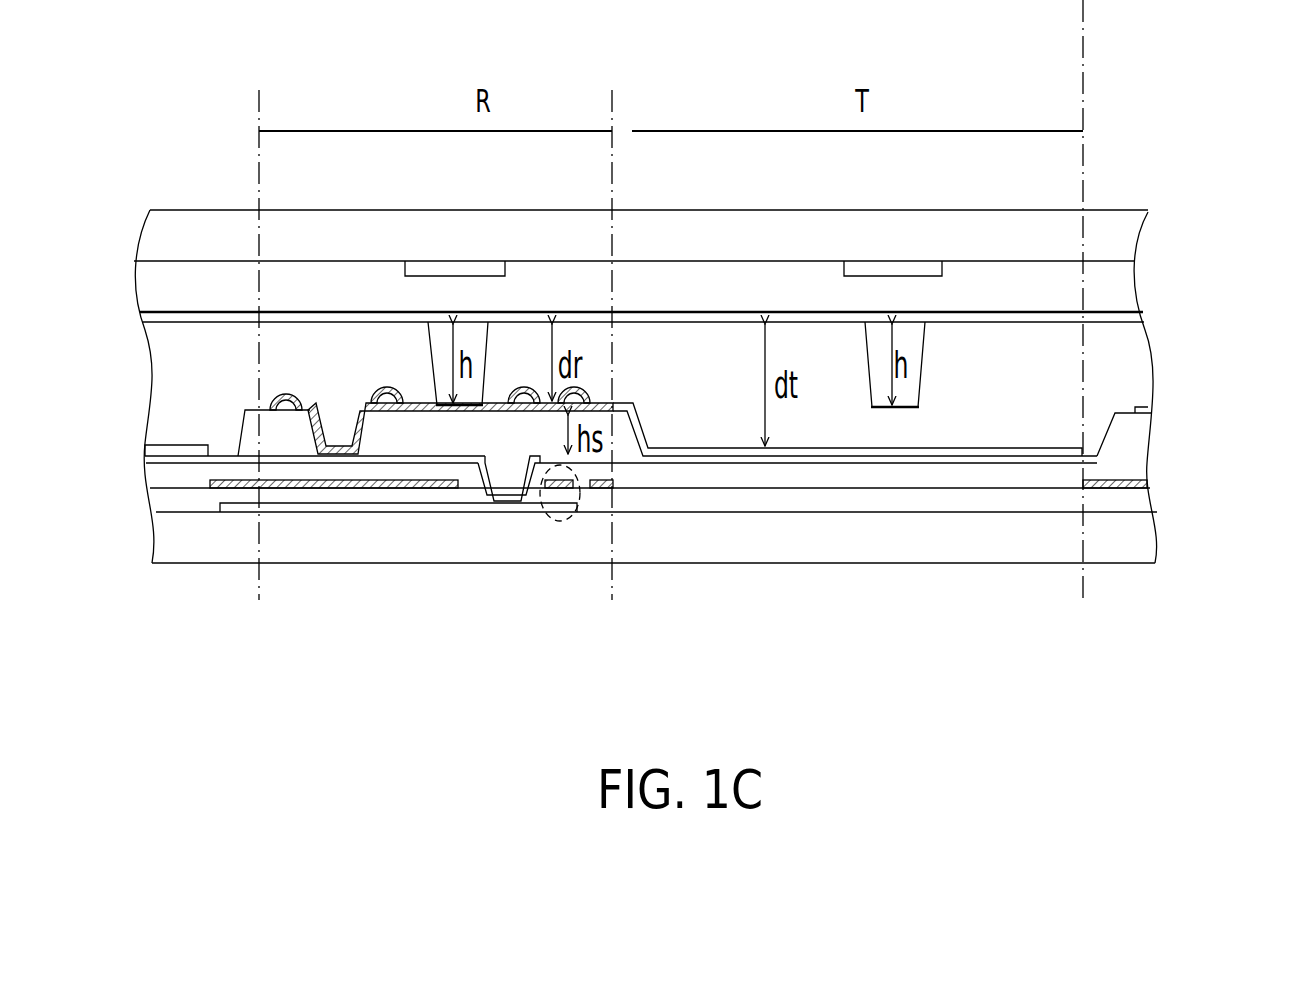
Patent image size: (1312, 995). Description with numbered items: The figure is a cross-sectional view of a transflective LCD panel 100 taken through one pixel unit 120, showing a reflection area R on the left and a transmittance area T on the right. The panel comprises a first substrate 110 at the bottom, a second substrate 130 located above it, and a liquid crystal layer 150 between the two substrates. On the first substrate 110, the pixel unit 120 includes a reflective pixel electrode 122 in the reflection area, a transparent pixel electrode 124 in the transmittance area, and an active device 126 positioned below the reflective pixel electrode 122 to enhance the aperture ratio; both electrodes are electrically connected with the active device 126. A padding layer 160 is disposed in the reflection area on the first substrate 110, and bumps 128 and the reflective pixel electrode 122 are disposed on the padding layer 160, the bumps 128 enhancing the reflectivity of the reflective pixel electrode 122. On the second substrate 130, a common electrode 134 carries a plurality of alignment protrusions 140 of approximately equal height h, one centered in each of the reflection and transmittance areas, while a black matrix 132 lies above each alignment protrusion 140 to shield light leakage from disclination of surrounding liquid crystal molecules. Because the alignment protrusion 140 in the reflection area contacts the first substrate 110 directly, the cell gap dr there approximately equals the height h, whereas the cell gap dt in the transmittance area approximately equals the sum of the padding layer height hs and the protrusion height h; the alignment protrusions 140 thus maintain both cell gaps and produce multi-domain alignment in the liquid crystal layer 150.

The LCD panel 100 is at (1254, 656).
The first substrate 110 is at (937, 574).
The pixel unit 120 is at (722, 624).
The reflective pixel electrode 122 is at (455, 411).
The transparent pixel electrode 124 is at (693, 450).
The active device 126 is at (561, 522).
The bumps 128 is at (388, 408).
The second substrate 130 is at (1148, 194).
The black matrix 132 is at (480, 268).
The common electrode 134 is at (1146, 318).
The alignment protrusions 140 is at (430, 355).
The liquid crystal layer 150 is at (1161, 372).
The padding layer 160 is at (252, 427).